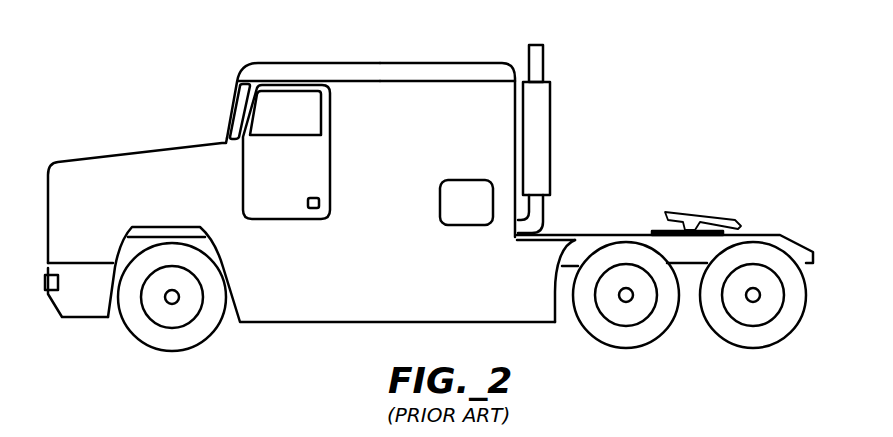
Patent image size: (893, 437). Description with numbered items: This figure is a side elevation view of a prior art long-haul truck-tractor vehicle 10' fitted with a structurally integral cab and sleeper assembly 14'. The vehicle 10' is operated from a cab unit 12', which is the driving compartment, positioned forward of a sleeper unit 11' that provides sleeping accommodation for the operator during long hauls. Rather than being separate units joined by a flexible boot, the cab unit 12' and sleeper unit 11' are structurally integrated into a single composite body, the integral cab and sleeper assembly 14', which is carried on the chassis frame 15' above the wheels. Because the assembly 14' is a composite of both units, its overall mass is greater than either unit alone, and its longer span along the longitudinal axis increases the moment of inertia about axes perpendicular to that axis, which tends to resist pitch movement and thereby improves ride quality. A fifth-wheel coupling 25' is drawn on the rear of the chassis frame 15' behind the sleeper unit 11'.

The truck-tractor vehicle 10' is at (452, 180).
The sleeper unit 11' is at (477, 167).
The cab unit 12' is at (331, 165).
The integral cab and sleeper assembly 14' is at (136, 163).
The chassis frame 15' is at (688, 237).
The fifth wheel 25' is at (662, 217).